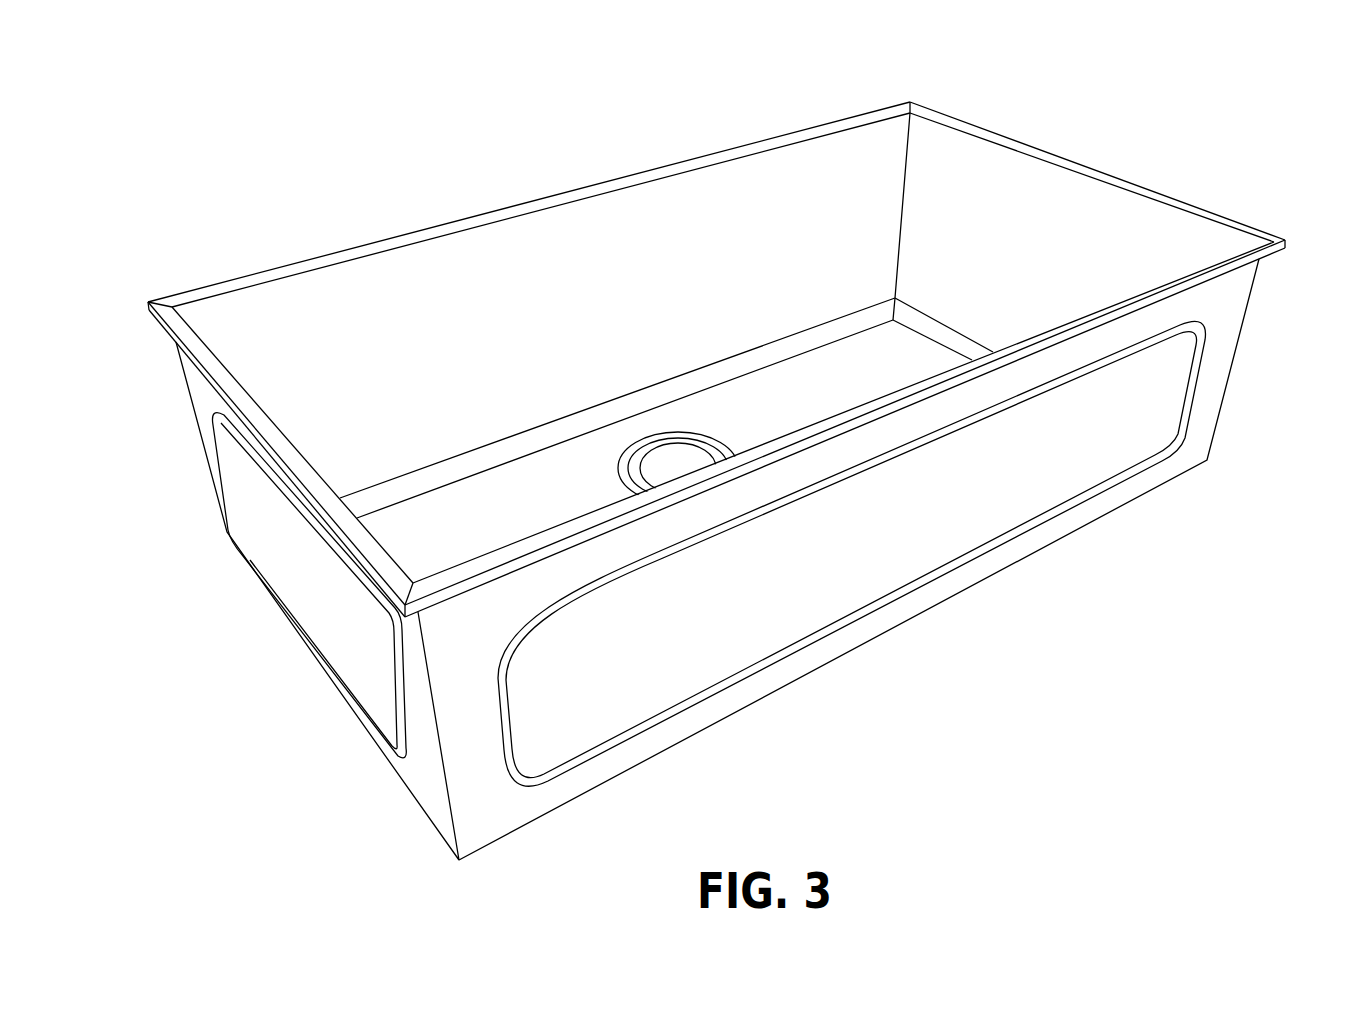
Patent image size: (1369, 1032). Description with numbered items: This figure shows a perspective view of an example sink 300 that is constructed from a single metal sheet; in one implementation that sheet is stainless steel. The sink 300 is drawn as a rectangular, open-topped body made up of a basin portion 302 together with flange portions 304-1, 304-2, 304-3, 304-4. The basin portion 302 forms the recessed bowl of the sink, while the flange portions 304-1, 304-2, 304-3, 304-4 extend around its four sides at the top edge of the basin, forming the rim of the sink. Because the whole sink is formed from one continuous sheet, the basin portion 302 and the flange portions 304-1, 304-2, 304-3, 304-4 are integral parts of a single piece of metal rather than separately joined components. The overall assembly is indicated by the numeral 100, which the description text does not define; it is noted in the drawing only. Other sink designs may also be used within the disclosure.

The sink 100 is at (1200, 100).
The sink 300 is at (884, 381).
The basin portion 302 is at (510, 518).
The flange portion 304-1 is at (497, 211).
The flange portion 304-2 is at (1060, 157).
The flange portion 304-3 is at (1217, 280).
The flange portion 304-4 is at (203, 375).